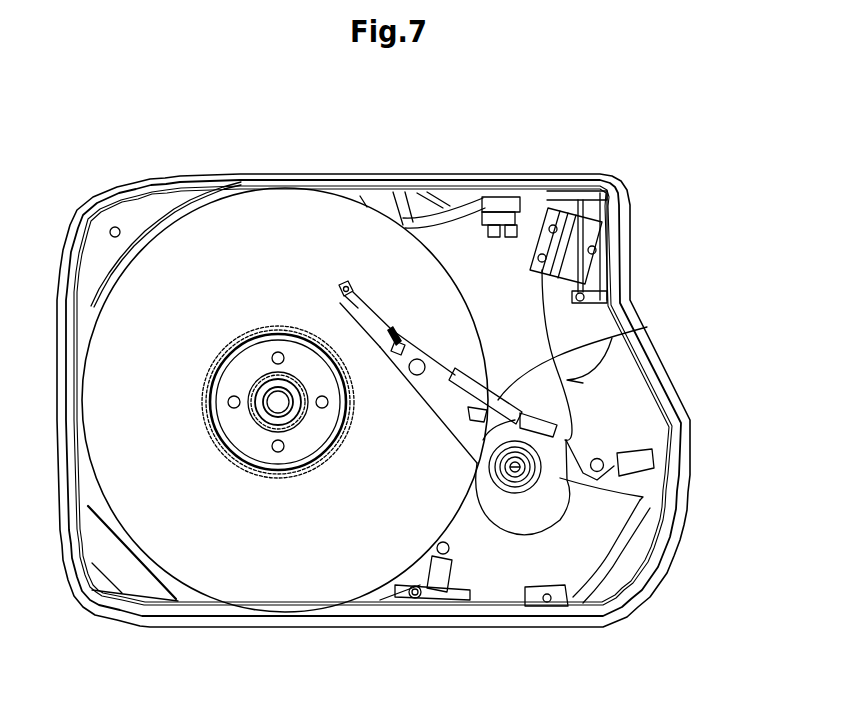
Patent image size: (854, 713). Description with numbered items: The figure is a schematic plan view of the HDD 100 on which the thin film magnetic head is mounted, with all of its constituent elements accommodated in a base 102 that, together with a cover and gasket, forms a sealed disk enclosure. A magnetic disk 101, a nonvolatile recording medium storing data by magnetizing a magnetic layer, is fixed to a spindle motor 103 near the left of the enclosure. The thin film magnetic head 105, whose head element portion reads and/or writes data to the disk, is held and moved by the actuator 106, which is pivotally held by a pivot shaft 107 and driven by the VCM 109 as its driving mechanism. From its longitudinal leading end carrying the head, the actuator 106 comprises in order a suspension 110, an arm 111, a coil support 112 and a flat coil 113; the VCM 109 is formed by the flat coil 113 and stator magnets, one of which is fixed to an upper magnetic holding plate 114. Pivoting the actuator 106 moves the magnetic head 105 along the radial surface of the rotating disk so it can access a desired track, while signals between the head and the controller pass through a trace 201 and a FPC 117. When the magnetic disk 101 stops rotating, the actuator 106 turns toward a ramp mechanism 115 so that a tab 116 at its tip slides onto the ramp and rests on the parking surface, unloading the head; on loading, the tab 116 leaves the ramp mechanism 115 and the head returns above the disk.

The HDD 100 is at (372, 162).
The magnetic disk 101 is at (243, 213).
The base 102 is at (626, 215).
The spindle motor 103 is at (258, 452).
The thin film magnetic head 105 is at (345, 300).
The actuator 106 is at (505, 357).
The pivot shaft 107 is at (515, 468).
The VCM 109 is at (648, 552).
The suspension 110 is at (375, 295).
The arm 111 is at (435, 423).
The coil support 112 is at (620, 467).
The flat coil 113 is at (560, 497).
The upper magnetic holding plate 114 is at (528, 592).
The ramp mechanism 115 is at (497, 197).
The tab 116 is at (344, 286).
The FPC 117 is at (591, 357).
The trace 201 is at (612, 338).